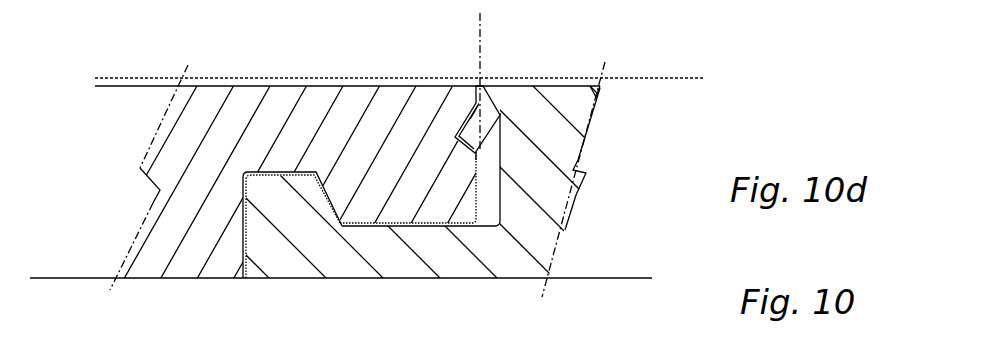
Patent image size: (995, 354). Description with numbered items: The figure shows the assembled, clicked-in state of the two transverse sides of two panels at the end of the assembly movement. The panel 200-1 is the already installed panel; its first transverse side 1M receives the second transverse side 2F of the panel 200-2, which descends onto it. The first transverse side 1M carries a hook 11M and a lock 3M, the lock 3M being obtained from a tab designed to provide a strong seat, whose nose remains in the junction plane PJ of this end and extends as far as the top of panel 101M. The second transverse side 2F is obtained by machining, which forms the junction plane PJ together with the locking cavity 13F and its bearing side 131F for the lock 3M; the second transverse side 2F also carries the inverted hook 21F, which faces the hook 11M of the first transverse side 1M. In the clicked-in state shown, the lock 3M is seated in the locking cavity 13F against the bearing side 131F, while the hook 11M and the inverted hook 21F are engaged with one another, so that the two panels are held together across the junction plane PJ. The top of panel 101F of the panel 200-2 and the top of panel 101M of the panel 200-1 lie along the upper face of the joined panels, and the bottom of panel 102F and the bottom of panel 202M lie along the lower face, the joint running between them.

The panel 200-2 is at (138, 78).
The panel 200-1 is at (667, 78).
The top of panel 101F is at (222, 86).
The top of panel 101M is at (574, 78).
The second transverse side 2F is at (262, 149).
The first transverse side 1M is at (530, 165).
The hook 11M is at (314, 231).
The inverted hook 21F is at (472, 153).
The lock 3M is at (482, 122).
The locking cavity 13F is at (476, 126).
The bearing side 131F is at (473, 153).
The junction plane PJ is at (493, 81).
The bottom of panel 102F is at (173, 278).
The bottom of panel 202M is at (473, 278).